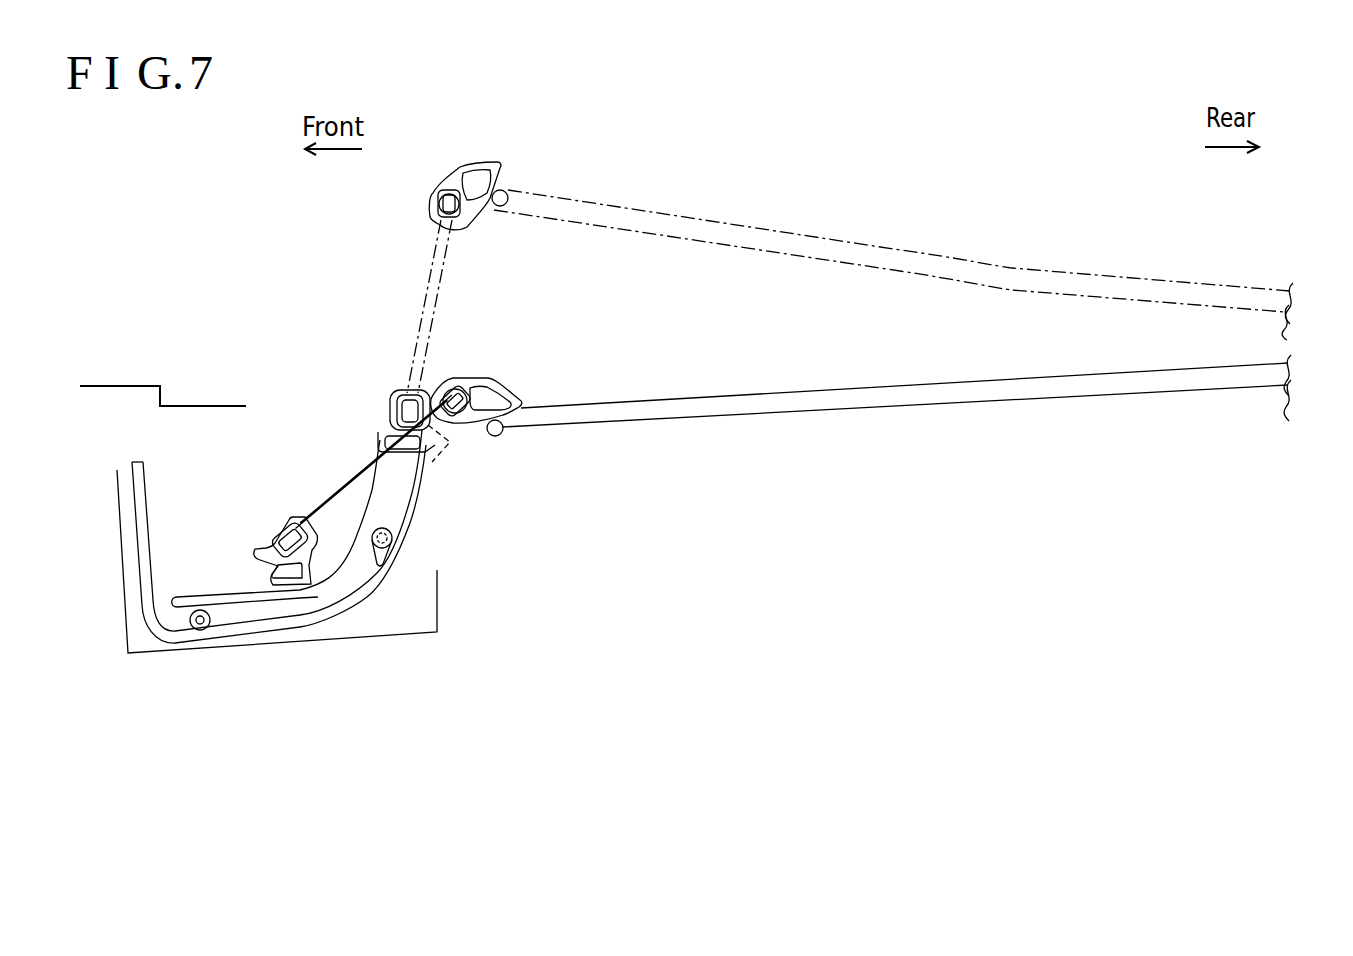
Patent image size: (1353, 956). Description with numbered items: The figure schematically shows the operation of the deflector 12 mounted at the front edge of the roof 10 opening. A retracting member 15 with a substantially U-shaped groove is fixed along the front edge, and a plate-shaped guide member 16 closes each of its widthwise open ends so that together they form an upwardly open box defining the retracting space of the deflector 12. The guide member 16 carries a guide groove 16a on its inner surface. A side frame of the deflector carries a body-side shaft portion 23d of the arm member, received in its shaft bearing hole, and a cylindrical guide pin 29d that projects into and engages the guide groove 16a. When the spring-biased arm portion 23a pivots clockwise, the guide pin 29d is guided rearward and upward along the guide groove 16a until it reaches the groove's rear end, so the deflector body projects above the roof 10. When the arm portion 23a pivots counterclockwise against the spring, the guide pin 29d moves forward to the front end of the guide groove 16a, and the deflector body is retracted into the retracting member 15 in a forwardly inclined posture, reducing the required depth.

The roof 10 is at (100, 386).
The deflector 12 is at (686, 152).
The retracting member 15 is at (413, 634).
The guide member 16 is at (138, 466).
The guide groove 16a is at (306, 617).
The arm portion 23a is at (888, 386).
The body-side shaft portion 23d is at (499, 208).
The guide pin 29d is at (390, 568).